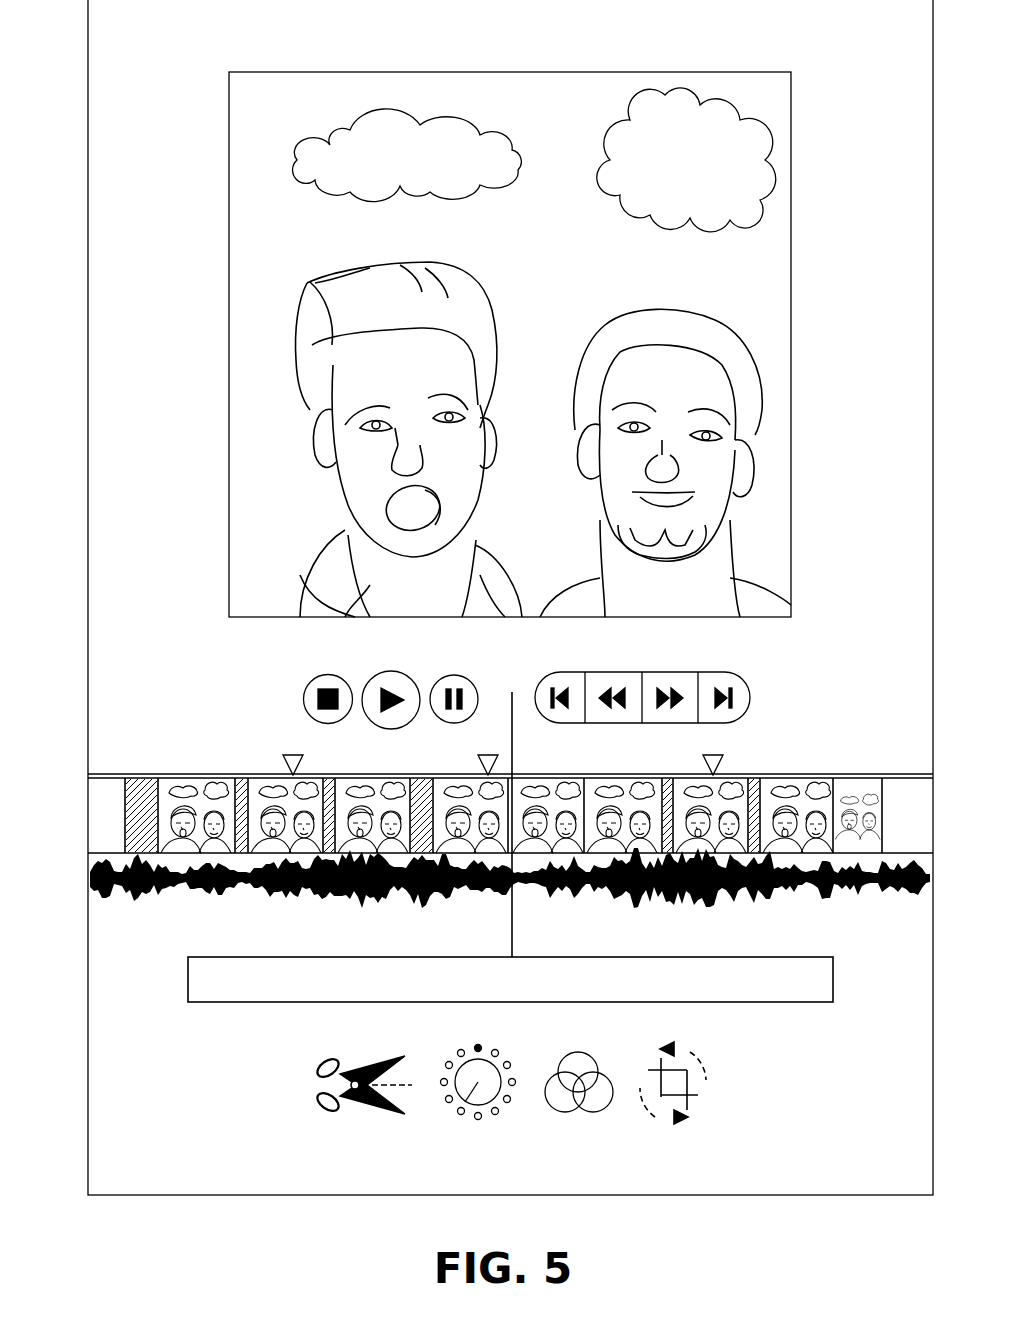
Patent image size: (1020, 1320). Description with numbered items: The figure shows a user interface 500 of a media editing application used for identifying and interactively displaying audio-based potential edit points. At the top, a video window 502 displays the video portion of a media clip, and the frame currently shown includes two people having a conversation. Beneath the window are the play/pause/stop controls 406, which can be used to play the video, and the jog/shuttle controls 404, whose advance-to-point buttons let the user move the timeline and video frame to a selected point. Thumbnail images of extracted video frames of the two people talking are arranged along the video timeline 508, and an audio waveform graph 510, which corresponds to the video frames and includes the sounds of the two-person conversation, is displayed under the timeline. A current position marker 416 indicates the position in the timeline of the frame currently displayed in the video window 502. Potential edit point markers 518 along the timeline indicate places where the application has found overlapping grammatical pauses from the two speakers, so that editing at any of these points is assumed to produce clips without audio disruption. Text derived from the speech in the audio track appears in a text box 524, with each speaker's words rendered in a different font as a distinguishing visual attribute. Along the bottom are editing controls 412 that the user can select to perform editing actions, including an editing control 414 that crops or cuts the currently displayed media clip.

The user interface 500 is at (88, 131).
The video window 502 is at (791, 258).
The play/pause/stop controls 406 is at (297, 657).
The potential edit point markers 518 is at (293, 755).
The jog/shuttle controls 404 is at (752, 700).
The video timeline 508 is at (222, 777).
The audio waveform graph 510 is at (170, 903).
The current position marker 416 is at (512, 937).
The text box 524 is at (833, 980).
The editing control 414 is at (329, 1084).
The editing controls 412 is at (487, 1111).